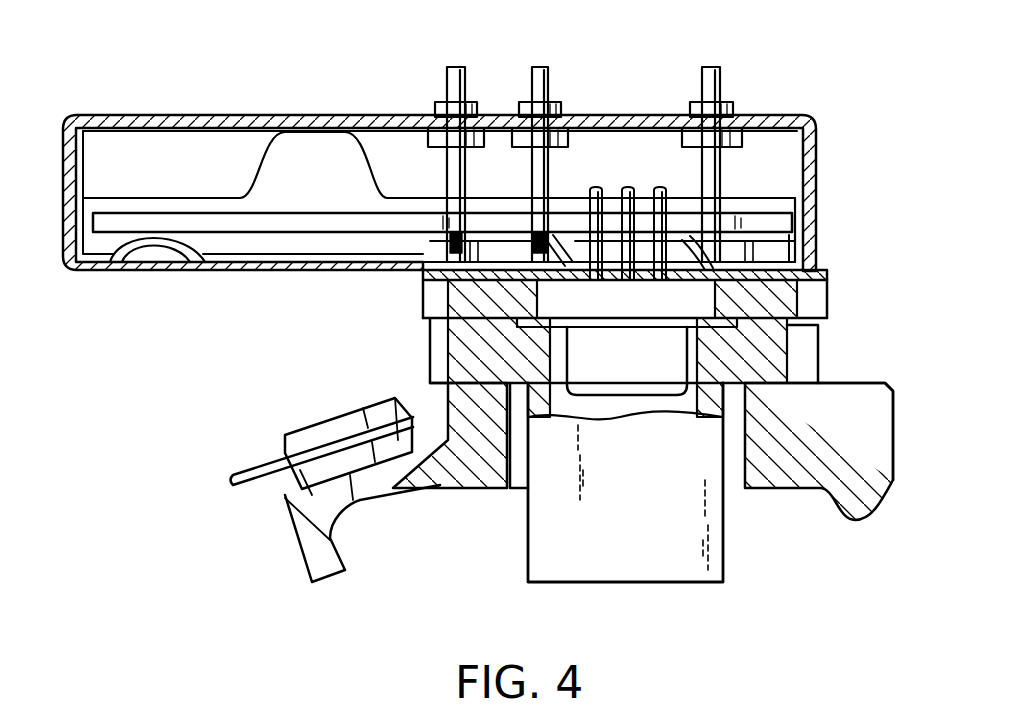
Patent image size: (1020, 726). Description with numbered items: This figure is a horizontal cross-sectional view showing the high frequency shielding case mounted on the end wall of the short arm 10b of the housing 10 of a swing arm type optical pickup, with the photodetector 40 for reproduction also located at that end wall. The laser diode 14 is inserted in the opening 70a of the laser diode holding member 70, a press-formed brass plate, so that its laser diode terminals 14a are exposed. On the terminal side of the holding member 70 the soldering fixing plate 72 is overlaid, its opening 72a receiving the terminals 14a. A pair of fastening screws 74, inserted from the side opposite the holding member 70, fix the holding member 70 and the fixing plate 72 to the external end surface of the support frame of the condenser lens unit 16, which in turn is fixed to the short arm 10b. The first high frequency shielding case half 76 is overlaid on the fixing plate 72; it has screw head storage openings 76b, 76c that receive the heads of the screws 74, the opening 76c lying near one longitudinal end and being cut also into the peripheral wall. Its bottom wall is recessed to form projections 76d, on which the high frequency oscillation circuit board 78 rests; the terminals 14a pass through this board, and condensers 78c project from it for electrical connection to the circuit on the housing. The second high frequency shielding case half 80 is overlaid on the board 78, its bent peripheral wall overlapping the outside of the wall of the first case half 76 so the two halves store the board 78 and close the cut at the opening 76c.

The housing 10 is at (467, 491).
The short arm 10b is at (800, 480).
The laser diode 14 is at (630, 322).
The laser diode terminals 14a is at (660, 188).
The condenser lens unit 16 is at (787, 347).
The photodetector for reproduction 40 is at (315, 432).
The laser diode holding member 70 is at (790, 305).
The opening 70a is at (560, 322).
The soldering fixing plate 72 is at (828, 273).
The opening 72a is at (700, 258).
The fastening screws 74 is at (755, 258).
The first high frequency shielding case half 76 is at (113, 270).
The screw head storage opening 76b is at (447, 242).
The screw head storage opening 76c is at (808, 262).
The projections 76d is at (172, 270).
The high frequency oscillation circuit board 78 is at (318, 225).
The condensers 78c is at (692, 100).
The second high frequency shielding case half 80 is at (225, 115).